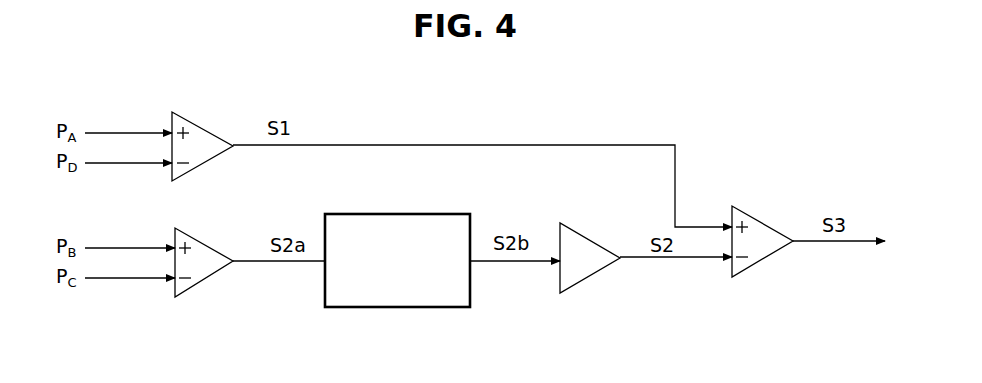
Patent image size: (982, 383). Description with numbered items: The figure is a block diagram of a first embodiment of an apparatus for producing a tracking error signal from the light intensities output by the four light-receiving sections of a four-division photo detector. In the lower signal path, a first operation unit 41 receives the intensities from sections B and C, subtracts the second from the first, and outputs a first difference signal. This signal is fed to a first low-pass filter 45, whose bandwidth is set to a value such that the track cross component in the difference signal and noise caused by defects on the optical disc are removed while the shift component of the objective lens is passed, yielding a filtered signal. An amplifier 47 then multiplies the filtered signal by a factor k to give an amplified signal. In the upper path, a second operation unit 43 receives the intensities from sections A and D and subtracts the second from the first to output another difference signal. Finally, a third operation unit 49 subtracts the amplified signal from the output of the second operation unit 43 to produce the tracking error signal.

The first operation unit 41 is at (207, 243).
The second operation unit 43 is at (203, 127).
The first low-pass filter 45 is at (400, 213).
The amplifier 47 is at (593, 240).
The third operation unit 49 is at (765, 222).